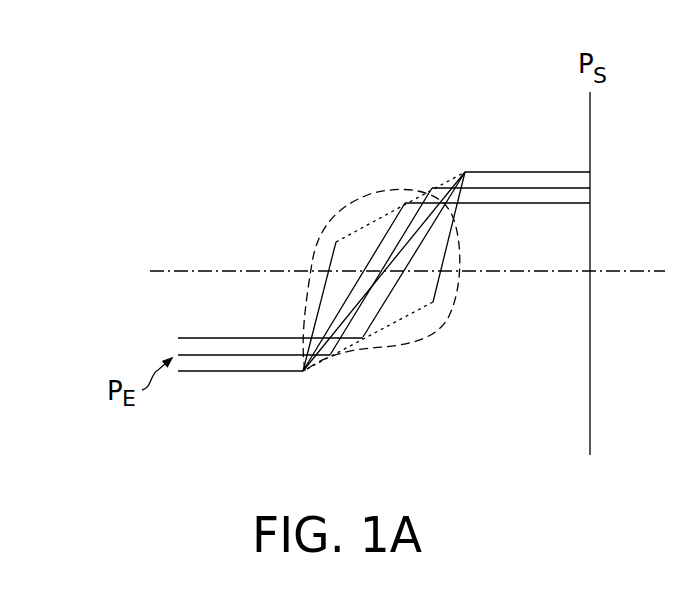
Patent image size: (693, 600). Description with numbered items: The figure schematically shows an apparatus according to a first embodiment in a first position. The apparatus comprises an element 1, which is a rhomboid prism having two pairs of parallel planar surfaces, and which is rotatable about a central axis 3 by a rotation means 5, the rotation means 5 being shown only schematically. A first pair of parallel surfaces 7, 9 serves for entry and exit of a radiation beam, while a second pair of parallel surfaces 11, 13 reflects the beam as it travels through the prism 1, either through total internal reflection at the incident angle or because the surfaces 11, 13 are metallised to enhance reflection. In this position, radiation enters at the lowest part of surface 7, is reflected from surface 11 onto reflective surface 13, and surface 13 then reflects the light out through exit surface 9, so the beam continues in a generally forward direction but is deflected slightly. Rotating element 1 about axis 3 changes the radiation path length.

The element 1 is at (447, 184).
The central axis 3 is at (388, 286).
The rotation means 5 is at (343, 211).
The entry surface 7 is at (314, 285).
The exit surface 9 is at (456, 253).
The reflective surface 11 is at (371, 349).
The reflective surface 13 is at (393, 199).